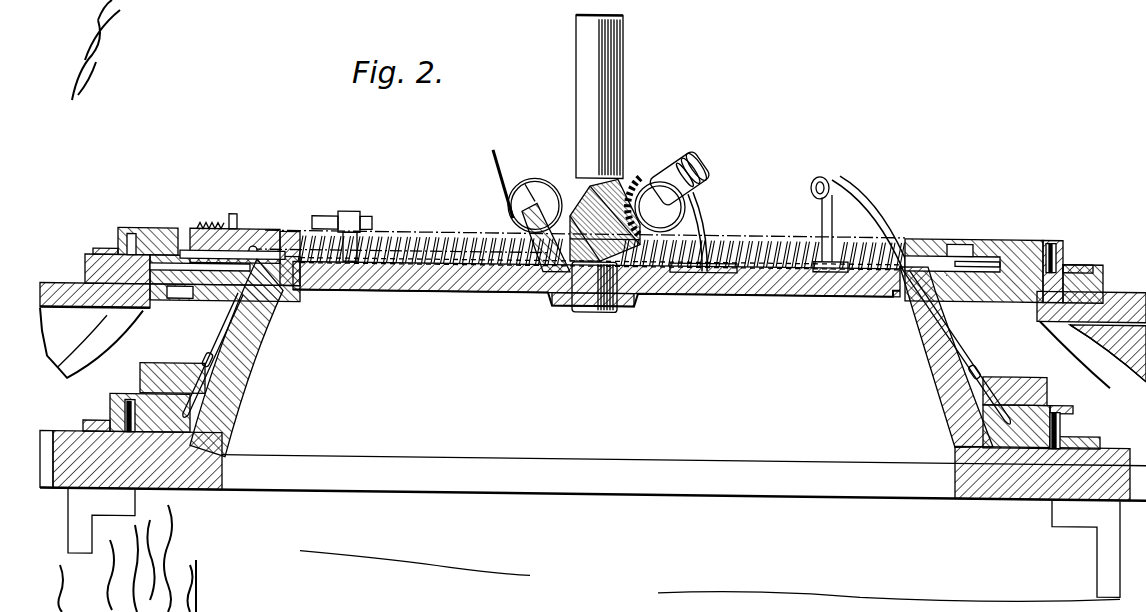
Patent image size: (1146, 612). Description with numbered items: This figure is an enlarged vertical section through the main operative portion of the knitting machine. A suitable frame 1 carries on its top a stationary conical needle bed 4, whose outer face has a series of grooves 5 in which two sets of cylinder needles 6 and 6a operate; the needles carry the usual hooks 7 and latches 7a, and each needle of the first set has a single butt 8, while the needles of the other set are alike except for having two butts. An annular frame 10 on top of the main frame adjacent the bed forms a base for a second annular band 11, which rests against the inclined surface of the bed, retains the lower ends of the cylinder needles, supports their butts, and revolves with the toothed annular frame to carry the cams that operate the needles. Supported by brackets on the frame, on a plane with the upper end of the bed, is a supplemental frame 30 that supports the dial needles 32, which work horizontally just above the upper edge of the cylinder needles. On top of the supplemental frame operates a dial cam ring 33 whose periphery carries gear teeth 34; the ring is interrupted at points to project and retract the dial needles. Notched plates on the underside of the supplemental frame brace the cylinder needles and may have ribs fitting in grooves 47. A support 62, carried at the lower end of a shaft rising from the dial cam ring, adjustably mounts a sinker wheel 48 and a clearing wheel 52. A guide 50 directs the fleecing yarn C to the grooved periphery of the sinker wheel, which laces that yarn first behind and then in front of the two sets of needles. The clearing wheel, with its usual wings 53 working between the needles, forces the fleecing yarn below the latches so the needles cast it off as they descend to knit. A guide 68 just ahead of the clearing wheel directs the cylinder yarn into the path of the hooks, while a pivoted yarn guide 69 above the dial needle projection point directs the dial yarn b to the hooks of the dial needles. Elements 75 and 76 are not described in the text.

The frame 1 is at (103, 504).
The conical needle bed 4 is at (240, 378).
The grooves 5 is at (263, 314).
The needles 6 is at (220, 329).
The needles 6a is at (572, 188).
The hooks 7 is at (277, 214).
The latches 7a is at (290, 280).
The single butt 8 is at (205, 355).
The annular frame 10 is at (125, 403).
The annular band 11 is at (143, 363).
The supplemental frame 30 is at (88, 269).
The dial needles 32 is at (233, 310).
The dial cam ring 33 is at (180, 228).
The gear teeth 34 is at (1087, 252).
The grooves 47 is at (231, 210).
The sinker wheel 48 is at (530, 287).
The guide 50 is at (513, 174).
The clearing wheel 52 is at (685, 205).
The wings 53 is at (645, 163).
The support 62 is at (747, 284).
The guide 68 is at (870, 217).
The yarn guide 69 is at (312, 234).
The bar 75 is at (247, 287).
The bar 76 is at (197, 295).
The dial yarn b is at (292, 241).
The fleecing yarn C is at (505, 177).